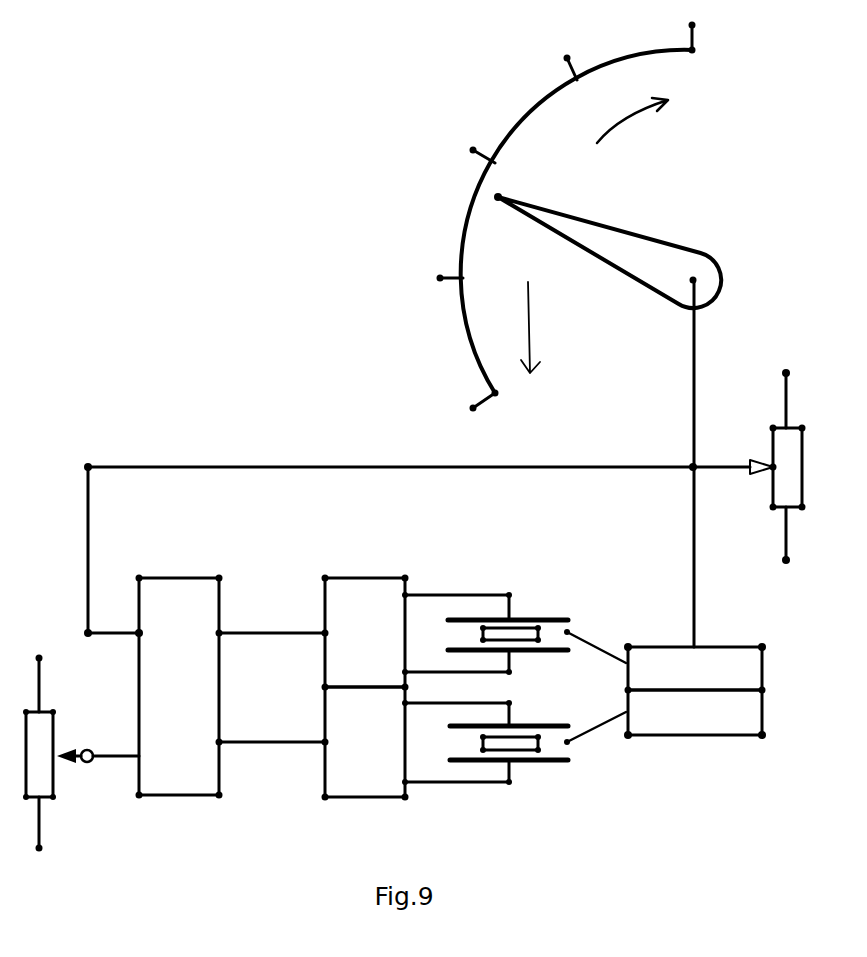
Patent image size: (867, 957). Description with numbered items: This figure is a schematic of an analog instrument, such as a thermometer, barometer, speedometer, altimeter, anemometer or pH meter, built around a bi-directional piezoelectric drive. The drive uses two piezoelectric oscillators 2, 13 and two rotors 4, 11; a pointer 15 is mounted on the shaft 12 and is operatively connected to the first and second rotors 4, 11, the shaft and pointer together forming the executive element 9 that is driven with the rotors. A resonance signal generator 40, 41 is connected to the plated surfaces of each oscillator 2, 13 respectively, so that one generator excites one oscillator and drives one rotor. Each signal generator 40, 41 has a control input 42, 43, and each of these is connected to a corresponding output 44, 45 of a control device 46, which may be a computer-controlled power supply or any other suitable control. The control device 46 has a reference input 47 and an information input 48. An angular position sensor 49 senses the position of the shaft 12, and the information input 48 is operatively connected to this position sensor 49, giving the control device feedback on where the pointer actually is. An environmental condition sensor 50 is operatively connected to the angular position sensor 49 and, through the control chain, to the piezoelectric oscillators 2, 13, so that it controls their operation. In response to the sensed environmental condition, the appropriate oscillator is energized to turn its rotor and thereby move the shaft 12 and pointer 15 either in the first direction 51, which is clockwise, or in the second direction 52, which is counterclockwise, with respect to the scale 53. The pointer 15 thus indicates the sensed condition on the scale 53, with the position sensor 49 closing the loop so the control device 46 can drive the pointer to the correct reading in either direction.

The piezoelectric oscillator 2 is at (548, 770).
The rotor 4 is at (695, 714).
The executive element 9 is at (707, 217).
The rotor 11 is at (695, 668).
The shaft 12 is at (694, 599).
The piezoelectric oscillator 13 is at (540, 608).
The pointer 15 is at (627, 250).
The resonance signal generator 40 is at (365, 744).
The resonance signal generator 41 is at (365, 633).
The control input 42 is at (300, 717).
The control input 43 is at (298, 607).
The output 44 is at (272, 727).
The output 45 is at (272, 615).
The control device 46 is at (179, 687).
The reference input 47 is at (98, 736).
The information input 48 is at (428, 548).
The angular position sensor 49 is at (788, 455).
The environmental condition sensor 50 is at (37, 765).
The first direction 51 is at (613, 132).
The second direction 52 is at (527, 330).
The scale 53 is at (438, 152).